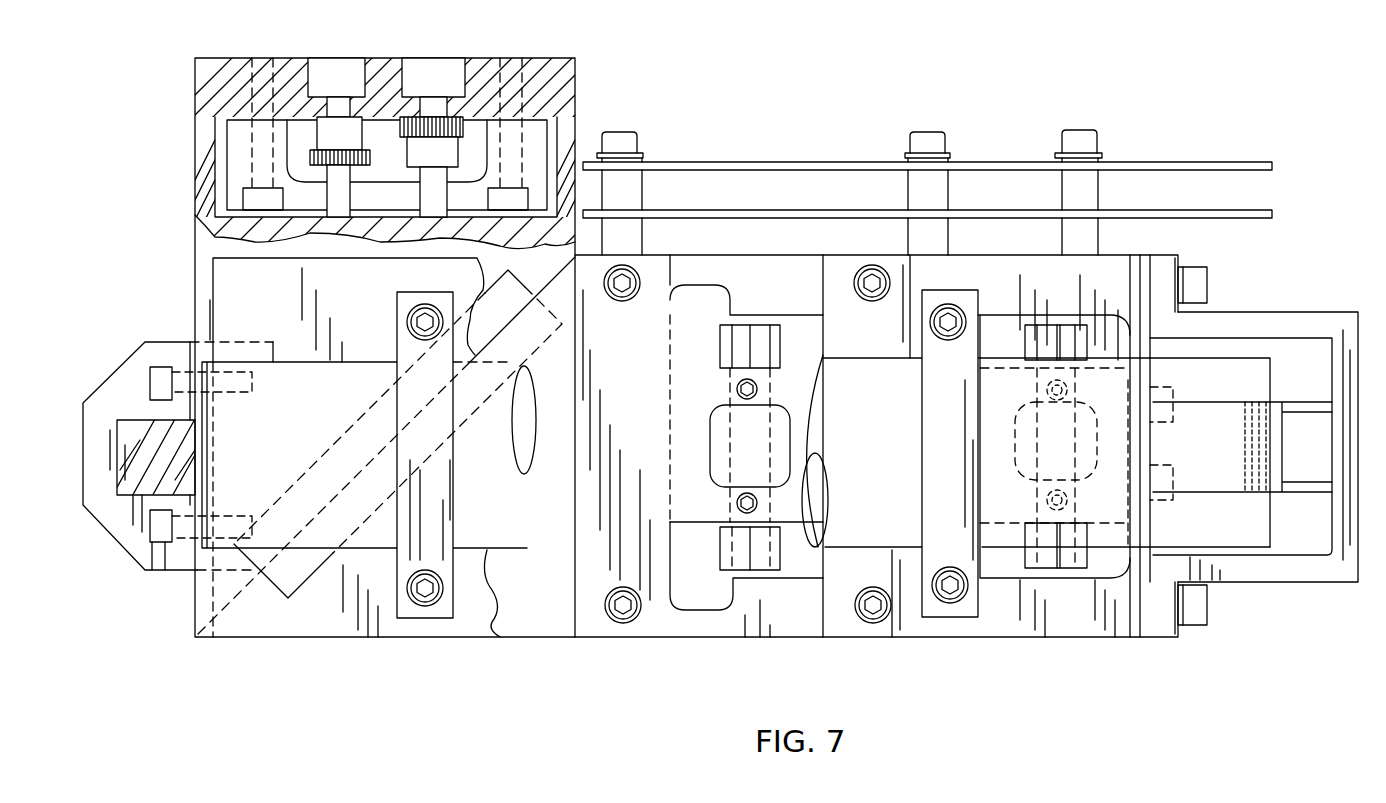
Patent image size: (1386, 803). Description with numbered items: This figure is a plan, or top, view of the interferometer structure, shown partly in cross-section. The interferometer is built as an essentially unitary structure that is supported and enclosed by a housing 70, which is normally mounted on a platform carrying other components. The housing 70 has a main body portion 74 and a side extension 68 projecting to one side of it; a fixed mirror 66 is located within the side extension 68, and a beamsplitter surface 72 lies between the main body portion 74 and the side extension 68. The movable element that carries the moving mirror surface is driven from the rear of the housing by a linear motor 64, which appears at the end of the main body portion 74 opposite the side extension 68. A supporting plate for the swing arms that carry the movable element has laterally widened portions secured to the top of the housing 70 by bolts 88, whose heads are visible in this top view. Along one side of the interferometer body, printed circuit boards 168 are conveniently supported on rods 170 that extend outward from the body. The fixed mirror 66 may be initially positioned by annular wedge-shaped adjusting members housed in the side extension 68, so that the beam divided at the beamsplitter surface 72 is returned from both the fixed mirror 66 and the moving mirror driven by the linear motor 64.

The linear motor 64 is at (1254, 583).
The fixed mirror 66 is at (308, 213).
The side extension 68 is at (578, 123).
The housing 70 is at (533, 605).
The beamsplitter surface 72 is at (317, 520).
The main body portion 74 is at (273, 628).
The bolts 88 is at (632, 275).
The printed circuit boards 168 is at (862, 169).
The rods 170 is at (1068, 190).